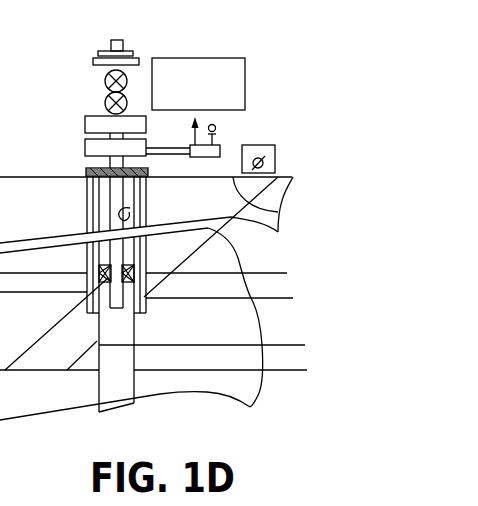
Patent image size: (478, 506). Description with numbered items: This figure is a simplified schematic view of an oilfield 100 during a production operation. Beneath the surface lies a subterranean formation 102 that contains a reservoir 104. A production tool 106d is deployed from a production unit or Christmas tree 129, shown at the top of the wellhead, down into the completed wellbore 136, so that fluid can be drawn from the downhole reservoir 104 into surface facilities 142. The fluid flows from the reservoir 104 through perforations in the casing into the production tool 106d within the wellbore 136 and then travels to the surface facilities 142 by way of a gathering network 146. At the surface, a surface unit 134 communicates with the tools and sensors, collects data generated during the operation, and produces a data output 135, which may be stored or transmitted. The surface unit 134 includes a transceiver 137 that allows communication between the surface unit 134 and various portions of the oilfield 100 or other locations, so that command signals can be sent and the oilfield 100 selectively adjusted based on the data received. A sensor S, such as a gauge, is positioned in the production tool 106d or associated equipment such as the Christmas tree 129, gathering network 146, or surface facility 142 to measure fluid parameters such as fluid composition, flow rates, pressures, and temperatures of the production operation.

The oilfield 100 is at (62, 117).
The Christmas tree 129 is at (124, 44).
The data output 135 is at (245, 88).
The surface unit 134 is at (192, 141).
The transceiver 137 is at (217, 135).
The surface facilities 142 is at (275, 160).
The sensor S is at (261, 157).
The gathering network 146 is at (278, 212).
The completed wellbore 136 is at (130, 208).
The subterranean formation 102 is at (189, 247).
The production tool 106d is at (88, 294).
The reservoir 104 is at (223, 331).